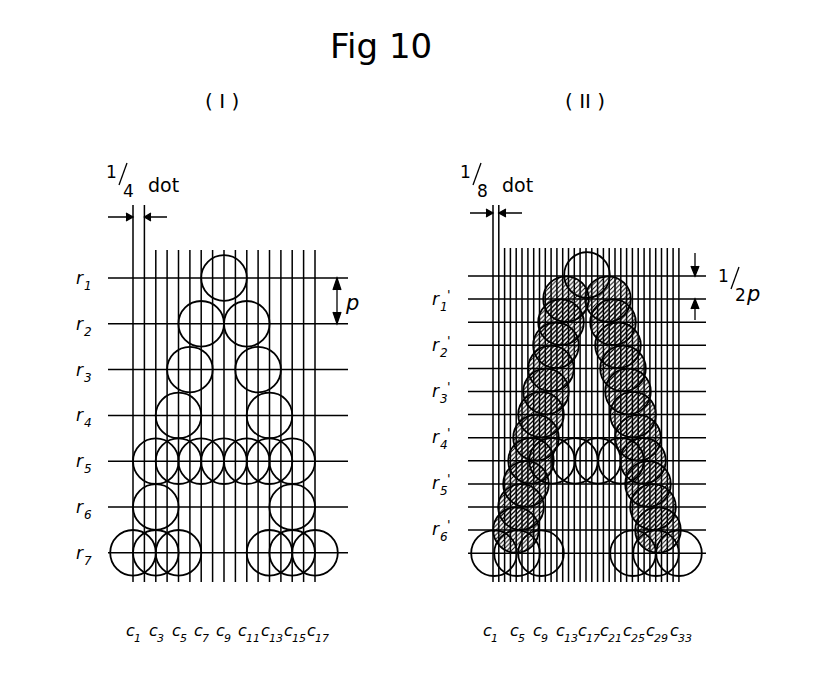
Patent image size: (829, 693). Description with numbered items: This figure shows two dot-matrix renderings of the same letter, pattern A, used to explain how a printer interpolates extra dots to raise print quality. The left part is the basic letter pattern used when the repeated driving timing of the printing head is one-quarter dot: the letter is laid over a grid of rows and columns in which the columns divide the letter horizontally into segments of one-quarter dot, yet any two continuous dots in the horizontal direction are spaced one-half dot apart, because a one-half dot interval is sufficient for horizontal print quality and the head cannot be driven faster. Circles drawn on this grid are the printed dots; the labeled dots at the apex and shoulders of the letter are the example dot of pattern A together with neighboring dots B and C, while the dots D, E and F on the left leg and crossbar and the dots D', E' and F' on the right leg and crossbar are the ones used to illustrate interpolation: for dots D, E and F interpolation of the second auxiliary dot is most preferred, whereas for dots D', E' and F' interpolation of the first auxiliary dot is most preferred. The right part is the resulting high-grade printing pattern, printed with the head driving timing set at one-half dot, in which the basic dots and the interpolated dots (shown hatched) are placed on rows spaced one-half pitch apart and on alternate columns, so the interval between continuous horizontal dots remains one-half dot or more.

The pattern A is at (232, 266).
The dot at row r2 right B is at (263, 307).
The dot at row r2 left C is at (197, 308).
The dot D is at (154, 409).
The dot D' is at (298, 409).
The dot E is at (143, 501).
The dot E' is at (307, 458).
The dot F is at (143, 458).
The dot F' is at (251, 525).